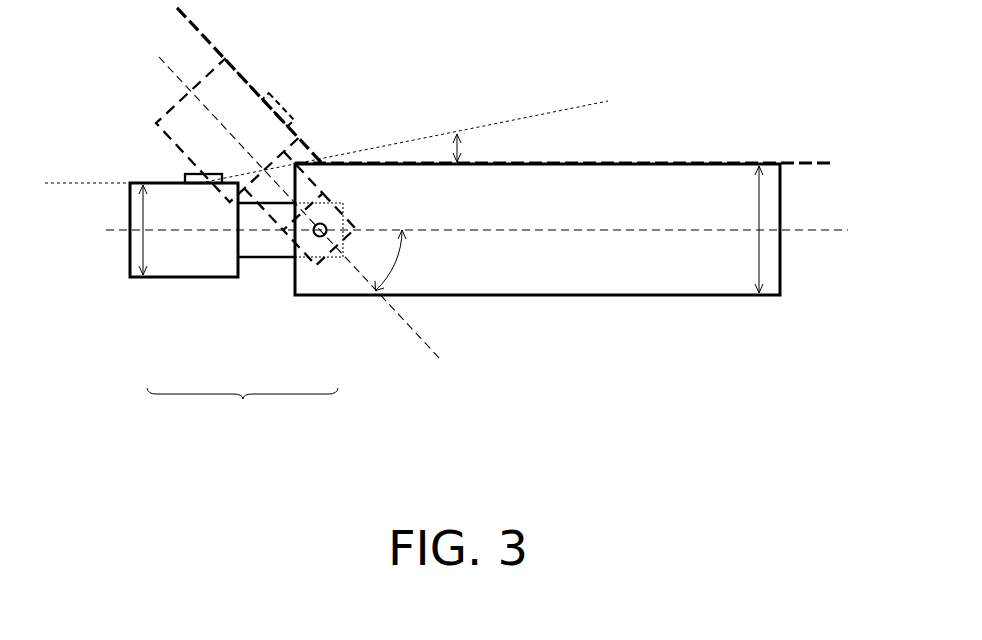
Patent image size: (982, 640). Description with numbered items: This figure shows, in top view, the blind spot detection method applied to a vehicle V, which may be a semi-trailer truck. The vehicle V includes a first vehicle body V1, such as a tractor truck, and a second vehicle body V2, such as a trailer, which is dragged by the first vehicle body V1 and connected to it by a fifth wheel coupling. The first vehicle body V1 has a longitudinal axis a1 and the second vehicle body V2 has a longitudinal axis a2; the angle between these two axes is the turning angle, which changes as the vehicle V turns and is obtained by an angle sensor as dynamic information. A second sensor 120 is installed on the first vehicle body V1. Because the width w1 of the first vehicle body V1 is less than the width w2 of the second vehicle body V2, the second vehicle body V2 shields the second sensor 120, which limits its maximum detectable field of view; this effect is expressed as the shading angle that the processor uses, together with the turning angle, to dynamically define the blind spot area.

The second sensor 120 is at (187, 180).
The first vehicle body V1 is at (165, 278).
The second vehicle body V2 is at (315, 295).
The vehicle V is at (242, 410).
The longitudinal axis of the first vehicle body a1 is at (259, 197).
The longitudinal axis of the second vehicle body a2 is at (493, 232).
The width of the first vehicle body w1 is at (140, 247).
The width of the second vehicle body w2 is at (758, 247).